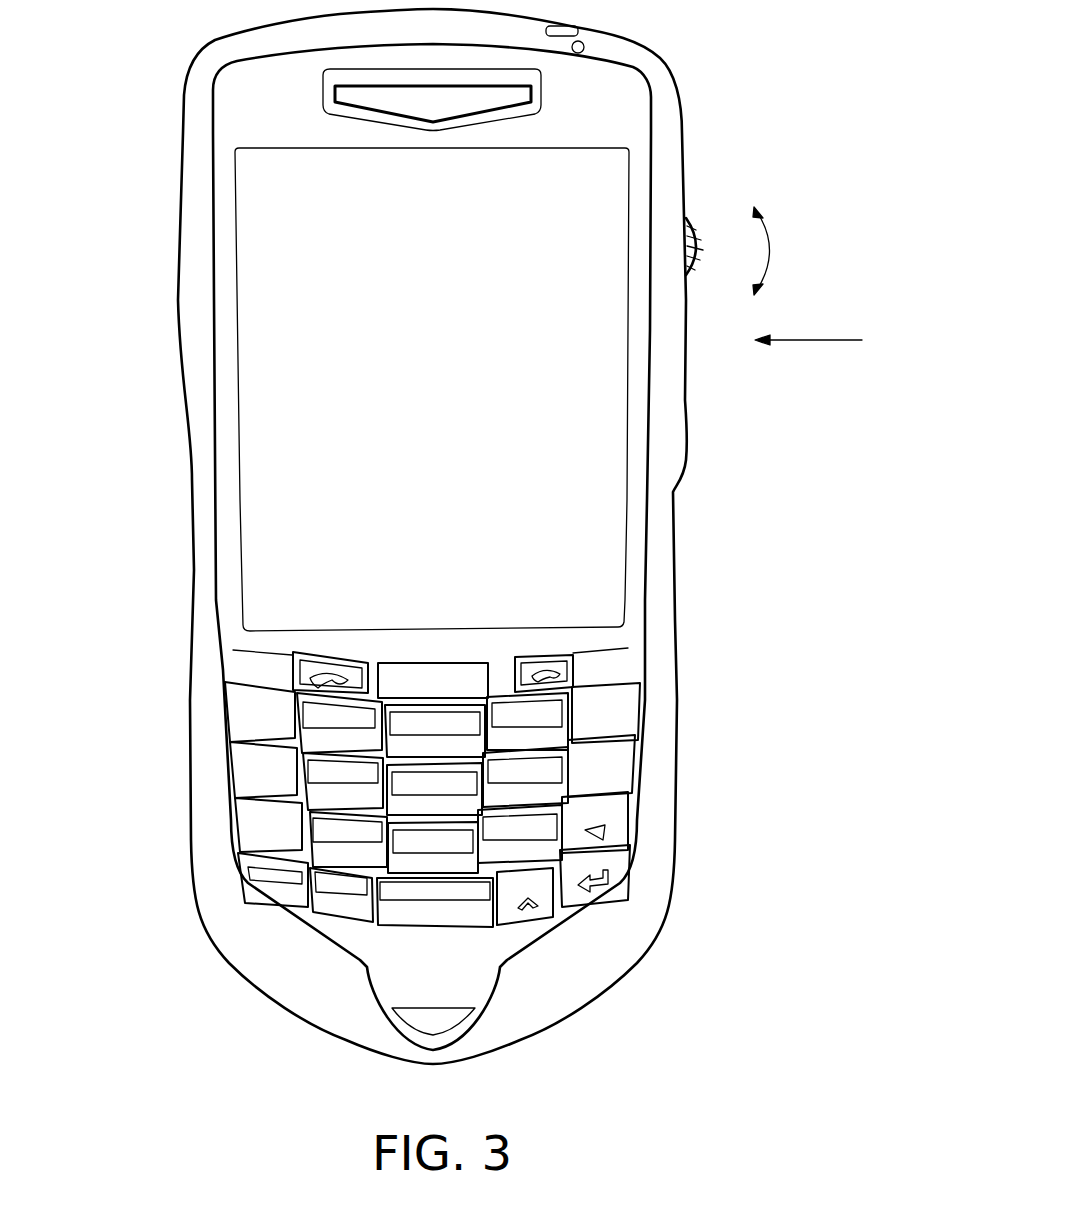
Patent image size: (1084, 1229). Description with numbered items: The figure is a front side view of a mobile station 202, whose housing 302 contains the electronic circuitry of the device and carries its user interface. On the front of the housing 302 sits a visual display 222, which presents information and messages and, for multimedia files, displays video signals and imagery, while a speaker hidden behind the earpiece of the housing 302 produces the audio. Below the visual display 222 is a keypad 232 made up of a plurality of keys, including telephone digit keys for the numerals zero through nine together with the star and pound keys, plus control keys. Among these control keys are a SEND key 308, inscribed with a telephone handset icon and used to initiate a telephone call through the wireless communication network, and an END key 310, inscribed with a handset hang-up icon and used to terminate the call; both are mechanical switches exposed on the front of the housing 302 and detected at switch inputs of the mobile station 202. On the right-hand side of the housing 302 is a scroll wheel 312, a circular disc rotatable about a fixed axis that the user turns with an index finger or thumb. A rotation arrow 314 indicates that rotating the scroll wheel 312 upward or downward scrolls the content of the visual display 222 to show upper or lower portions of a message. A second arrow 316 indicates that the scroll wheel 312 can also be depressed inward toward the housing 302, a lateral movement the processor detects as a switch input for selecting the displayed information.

The mobile station 202 is at (518, 538).
The visual display 222 is at (273, 205).
The keypad 232 is at (552, 745).
The housing 302 is at (677, 115).
The SEND key 308 is at (315, 658).
The END key 310 is at (560, 662).
The scroll wheel 312 is at (698, 228).
The rotation arrow 314 is at (777, 250).
The arrow 316 is at (805, 342).